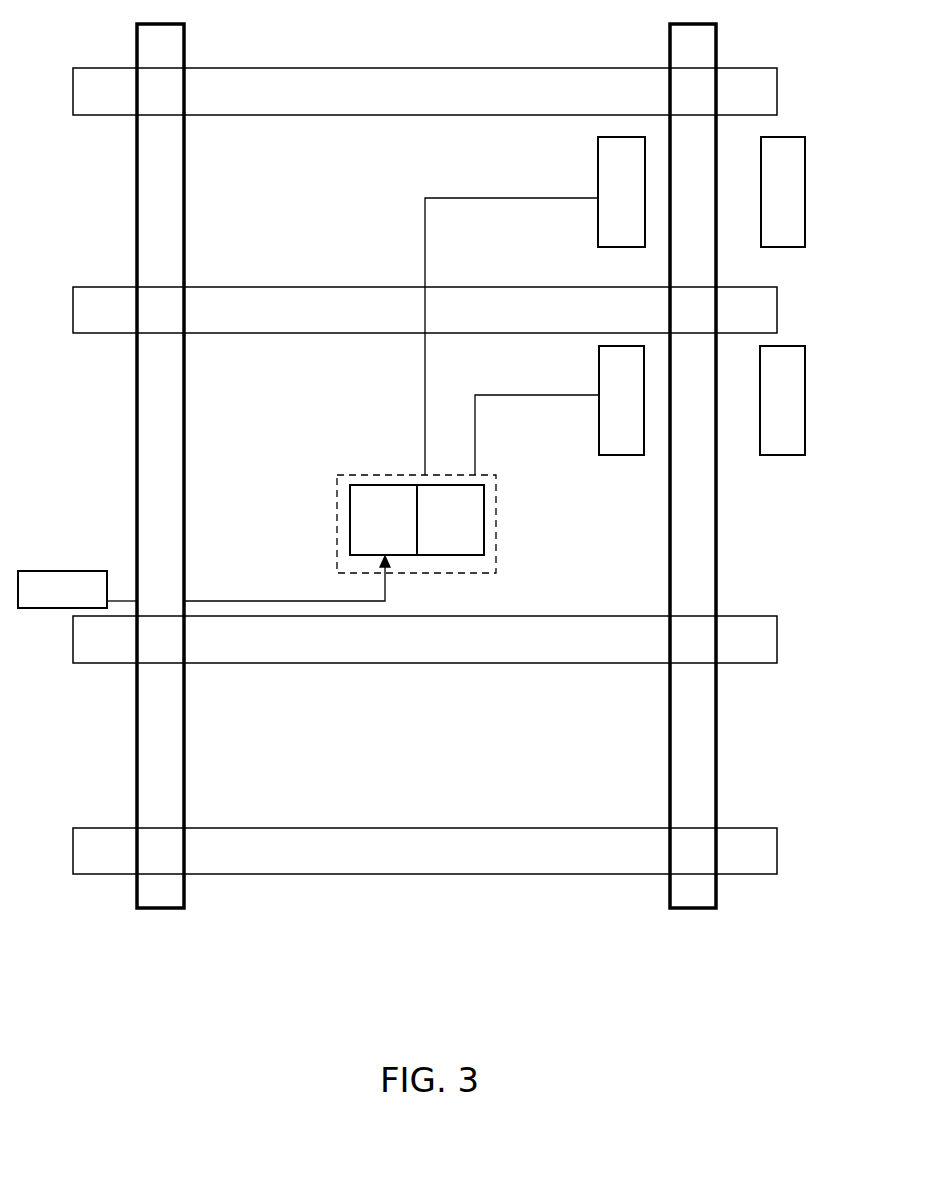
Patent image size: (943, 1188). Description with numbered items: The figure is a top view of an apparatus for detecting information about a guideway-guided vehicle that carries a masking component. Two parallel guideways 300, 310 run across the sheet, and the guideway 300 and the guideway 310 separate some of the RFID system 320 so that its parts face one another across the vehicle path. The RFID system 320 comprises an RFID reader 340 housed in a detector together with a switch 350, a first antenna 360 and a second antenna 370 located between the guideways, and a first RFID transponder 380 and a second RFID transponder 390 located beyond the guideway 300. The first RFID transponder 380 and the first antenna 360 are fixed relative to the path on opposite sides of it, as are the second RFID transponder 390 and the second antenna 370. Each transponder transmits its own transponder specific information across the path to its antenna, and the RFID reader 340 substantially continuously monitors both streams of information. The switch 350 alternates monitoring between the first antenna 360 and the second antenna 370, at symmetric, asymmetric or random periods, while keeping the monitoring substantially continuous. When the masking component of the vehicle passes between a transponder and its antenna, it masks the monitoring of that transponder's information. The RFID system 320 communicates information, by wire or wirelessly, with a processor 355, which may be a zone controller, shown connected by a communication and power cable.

The guideway 300 is at (685, 910).
The guideway 310 is at (160, 910).
The RFID system 320 is at (431, 512).
The RFID reader 340 is at (350, 510).
The switch 350 is at (484, 527).
The processor 355 is at (50, 570).
The first antenna 360 is at (599, 432).
The second antenna 370 is at (598, 222).
The first RFID transponder 380 is at (805, 430).
The second RFID transponder 390 is at (805, 187).